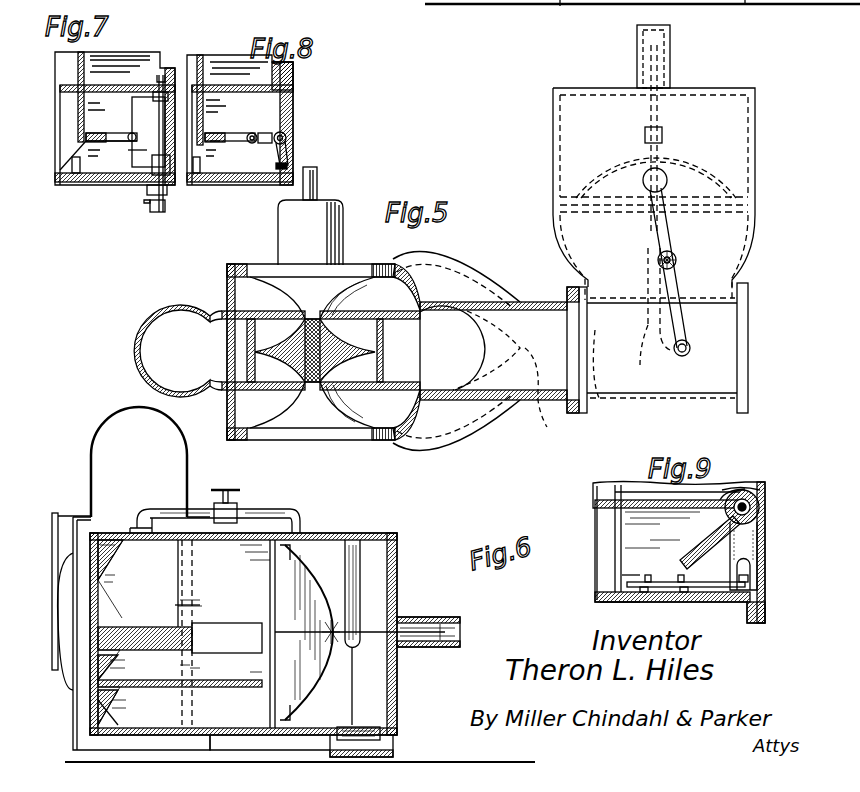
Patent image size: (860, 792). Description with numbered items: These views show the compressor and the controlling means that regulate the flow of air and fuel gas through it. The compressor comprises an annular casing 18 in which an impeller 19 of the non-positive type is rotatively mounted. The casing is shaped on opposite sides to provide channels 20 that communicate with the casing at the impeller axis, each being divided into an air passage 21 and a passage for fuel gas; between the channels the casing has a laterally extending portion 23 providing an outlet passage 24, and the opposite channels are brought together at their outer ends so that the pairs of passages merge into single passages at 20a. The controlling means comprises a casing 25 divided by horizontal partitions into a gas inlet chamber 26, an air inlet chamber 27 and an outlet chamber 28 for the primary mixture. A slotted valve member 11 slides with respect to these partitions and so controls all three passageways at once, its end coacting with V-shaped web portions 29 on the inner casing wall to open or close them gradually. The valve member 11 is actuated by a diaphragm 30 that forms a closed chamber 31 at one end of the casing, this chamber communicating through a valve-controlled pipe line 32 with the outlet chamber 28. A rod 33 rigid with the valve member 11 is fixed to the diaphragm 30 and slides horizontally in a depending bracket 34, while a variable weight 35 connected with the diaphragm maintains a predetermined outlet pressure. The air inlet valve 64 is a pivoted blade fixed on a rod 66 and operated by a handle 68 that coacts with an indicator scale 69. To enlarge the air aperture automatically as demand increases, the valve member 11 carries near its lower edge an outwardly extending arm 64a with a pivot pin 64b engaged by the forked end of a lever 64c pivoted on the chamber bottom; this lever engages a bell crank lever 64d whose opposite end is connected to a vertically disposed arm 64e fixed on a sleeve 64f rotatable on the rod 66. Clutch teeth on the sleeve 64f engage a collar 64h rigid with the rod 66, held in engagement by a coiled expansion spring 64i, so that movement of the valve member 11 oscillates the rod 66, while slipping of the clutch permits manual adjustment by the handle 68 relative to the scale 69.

In FIG. 7, the valve member 11 is at (100, 68).
In FIG. 5, the valve member 11 is at (620, 400).
In FIG. 6, the valve member 11 is at (275, 545).
In FIG. 9, the valve member 11 is at (618, 530).
In FIG. 5, the annular casing 18 is at (134, 345).
In FIG. 6, the annular casing 18 is at (188, 466).
In FIG. 5, the impeller 19 is at (233, 305).
In FIG. 5, the channels 20 is at (440, 262).
In FIG. 5, the single passages 20a is at (547, 425).
In FIG. 5, the air passage 21 is at (523, 6).
In FIG. 5, the laterally extending portion 23 is at (490, 400).
In FIG. 5, the outlet passage 24 is at (493, 320).
In FIG. 5, the casing 25 is at (748, 195).
In FIG. 6, the casing 25 is at (238, 535).
In FIG. 6, the gas inlet chamber 26 is at (95, 672).
In FIG. 7, the air inlet chamber 27 is at (112, 143).
In FIG. 8, the air inlet chamber 27 is at (257, 133).
In FIG. 6, the air inlet chamber 27 is at (110, 703).
In FIG. 6, the outlet chamber 28 is at (98, 535).
In FIG. 5, the V-shaped web portions 29 is at (650, 405).
In FIG. 6, the V-shaped web portions 29 is at (108, 568).
In FIG. 5, the diaphragm 30 is at (700, 162).
In FIG. 6, the diaphragm 30 is at (305, 565).
In FIG. 6, the closed chamber 31 is at (380, 580).
In FIG. 5, the valve-controlled pipe line 32 is at (675, 292).
In FIG. 6, the valve-controlled pipe line 32 is at (262, 512).
In FIG. 6, the rod 33 is at (430, 615).
In FIG. 6, the depending bracket 34 is at (355, 632).
In FIG. 6, the variable weight 35 is at (370, 725).
In FIG. 7, the air inlet valve 64 is at (138, 148).
In FIG. 5, the air inlet valve 64 is at (730, 4).
In FIG. 9, the air inlet valve 64 is at (698, 545).
In FIG. 7, the outwardly extending arm 64a is at (96, 134).
In FIG. 8, the outwardly extending arm 64a is at (215, 134).
In FIG. 9, the outwardly extending arm 64a is at (620, 605).
In FIG. 8, the pivot pin 64b is at (220, 142).
In FIG. 9, the pivot pin 64b is at (640, 575).
In FIG. 7, the lever 64c is at (78, 175).
In FIG. 8, the lever 64c is at (285, 110).
In FIG. 9, the lever 64c is at (668, 580).
In FIG. 8, the bell crank lever 64d is at (287, 136).
In FIG. 8, the vertically disposed arm 64e is at (290, 158).
In FIG. 9, the vertically disposed arm 64e is at (754, 548).
In FIG. 7, the sleeve 64f is at (168, 190).
In FIG. 9, the sleeve 64f is at (748, 493).
In FIG. 7, the collar 64h is at (143, 152).
In FIG. 7, the coiled expansion spring 64i is at (168, 80).
In FIG. 7, the rod 66 is at (158, 112).
In FIG. 9, the rod 66 is at (758, 510).
In FIG. 7, the operating handle 68 is at (150, 196).
In FIG. 7, the indicator scale 69 is at (146, 202).